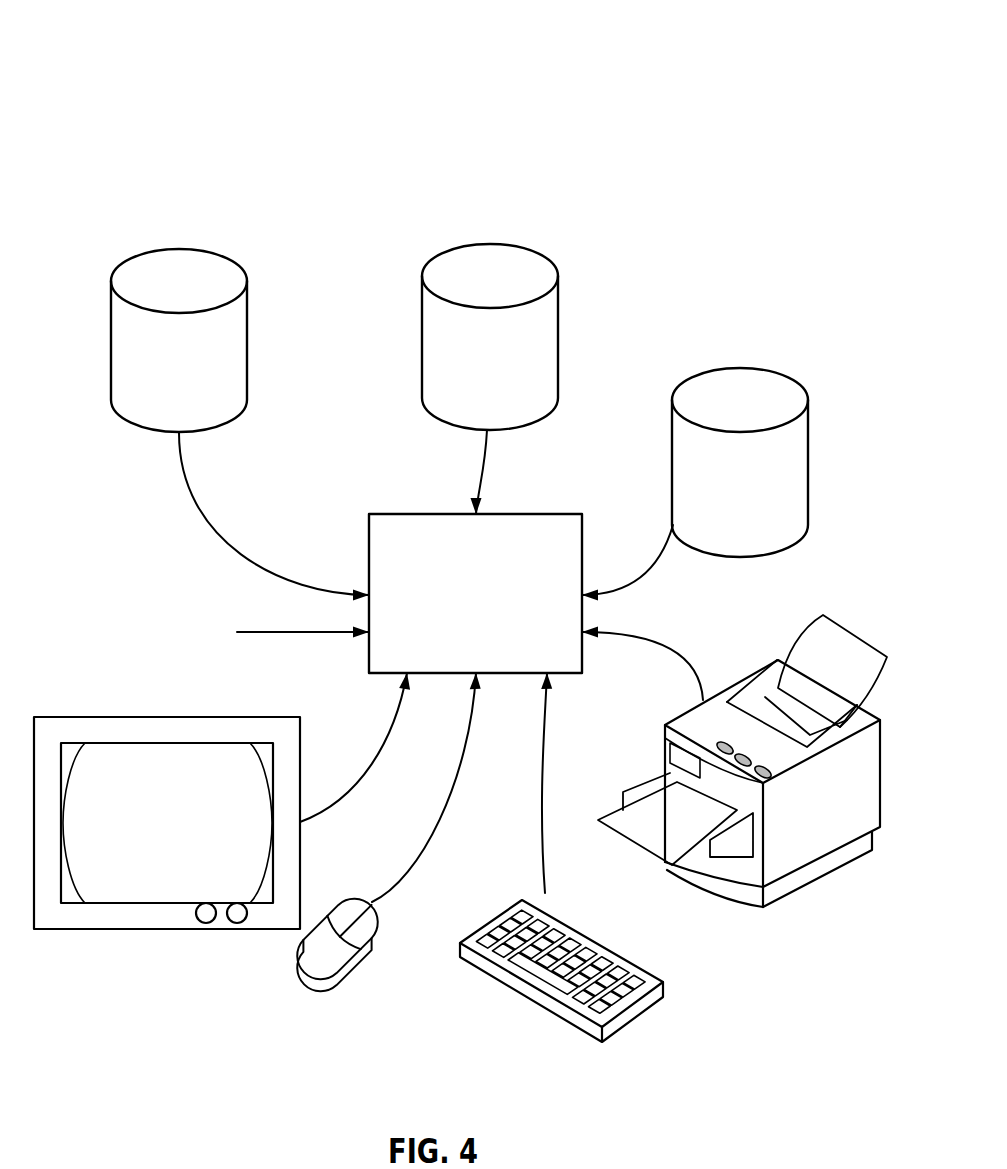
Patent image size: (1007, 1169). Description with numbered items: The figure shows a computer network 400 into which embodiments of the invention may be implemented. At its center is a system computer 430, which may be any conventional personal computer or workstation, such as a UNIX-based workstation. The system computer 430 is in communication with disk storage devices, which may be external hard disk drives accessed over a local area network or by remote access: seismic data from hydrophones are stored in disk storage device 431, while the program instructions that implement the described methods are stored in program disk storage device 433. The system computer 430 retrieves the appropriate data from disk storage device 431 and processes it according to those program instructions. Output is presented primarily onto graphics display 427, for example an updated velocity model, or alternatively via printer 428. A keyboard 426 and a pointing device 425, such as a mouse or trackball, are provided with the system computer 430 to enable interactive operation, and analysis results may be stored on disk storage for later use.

The computer network 400 is at (106, 47).
The program disk storage device 433 is at (218, 250).
The disk storage device 431 is at (538, 250).
The pointing device 425 is at (740, 368).
The system computer 430 is at (513, 514).
The graphics display 427 is at (168, 929).
The keyboard 426 is at (625, 1025).
The printer 428 is at (787, 897).